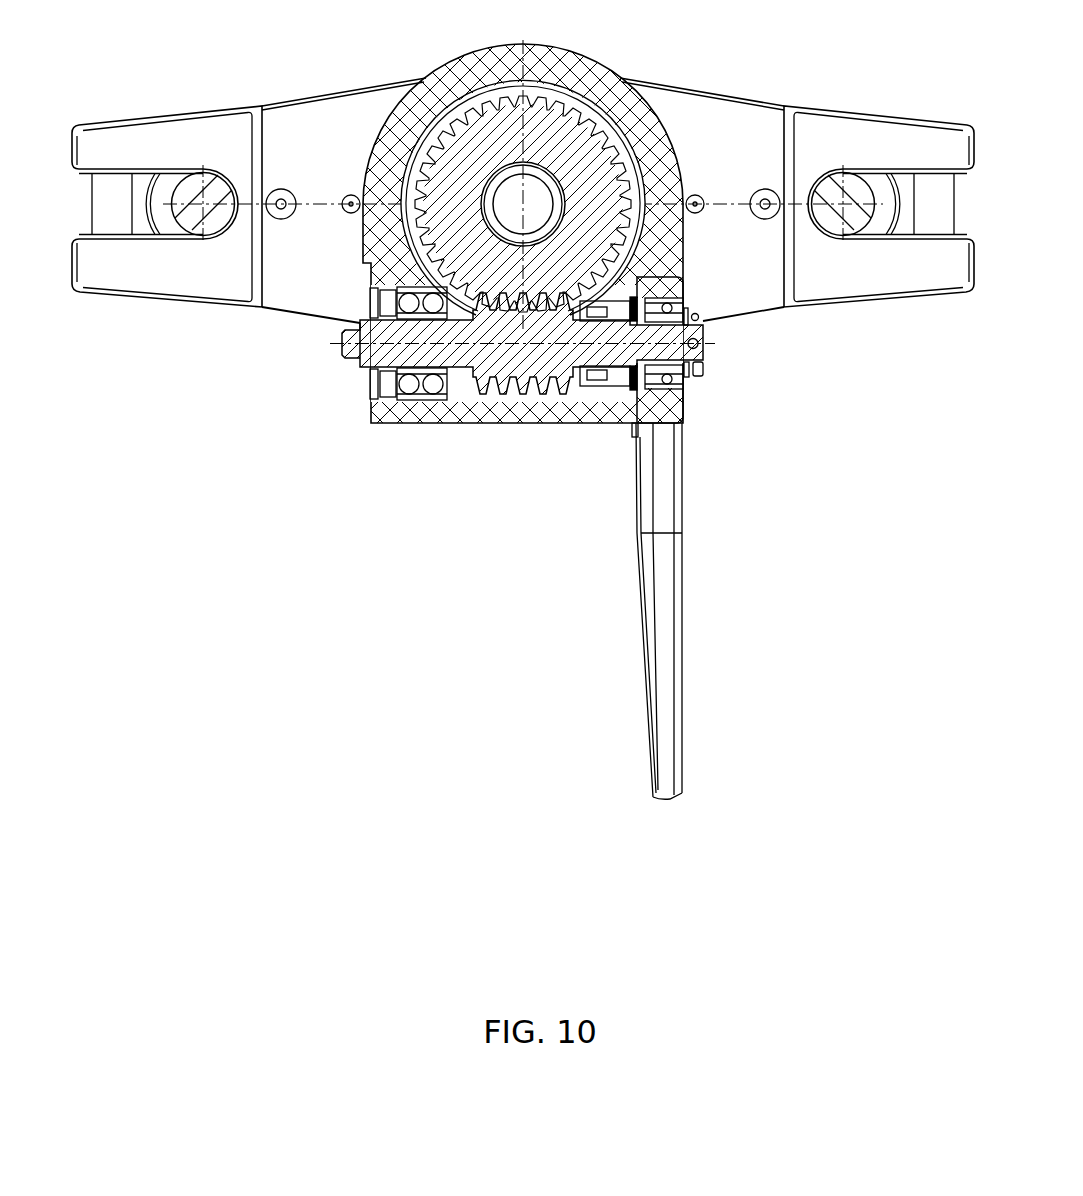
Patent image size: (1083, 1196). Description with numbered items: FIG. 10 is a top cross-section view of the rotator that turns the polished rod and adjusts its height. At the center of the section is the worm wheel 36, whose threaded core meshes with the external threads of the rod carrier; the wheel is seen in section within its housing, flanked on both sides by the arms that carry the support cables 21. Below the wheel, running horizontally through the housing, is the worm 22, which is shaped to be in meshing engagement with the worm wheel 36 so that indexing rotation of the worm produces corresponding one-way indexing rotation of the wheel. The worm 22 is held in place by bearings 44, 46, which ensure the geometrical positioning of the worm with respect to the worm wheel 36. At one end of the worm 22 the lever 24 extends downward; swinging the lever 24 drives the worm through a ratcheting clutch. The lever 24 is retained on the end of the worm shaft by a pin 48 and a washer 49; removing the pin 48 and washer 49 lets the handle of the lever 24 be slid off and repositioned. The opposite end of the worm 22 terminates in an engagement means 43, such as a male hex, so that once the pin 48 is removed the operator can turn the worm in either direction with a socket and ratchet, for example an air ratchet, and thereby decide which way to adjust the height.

The support cables 21 is at (218, 193).
The worm 22 is at (495, 362).
The lever 24 is at (672, 670).
The worm wheel 36 is at (557, 134).
The engagement means 43 is at (353, 355).
The bearing 44 is at (413, 398).
The bearing 46 is at (600, 393).
The pin 48 is at (693, 373).
The washer 49 is at (685, 375).